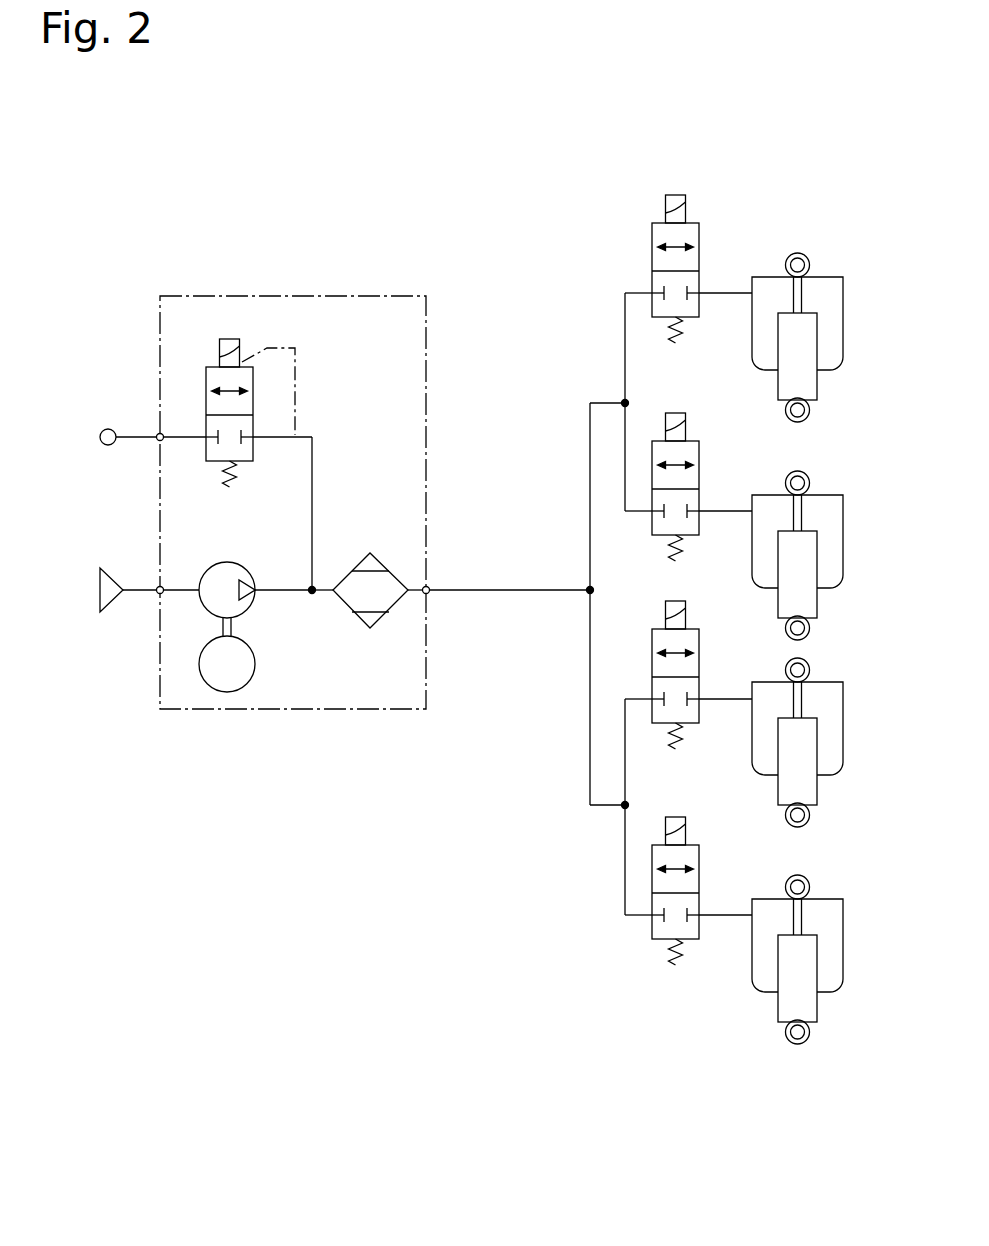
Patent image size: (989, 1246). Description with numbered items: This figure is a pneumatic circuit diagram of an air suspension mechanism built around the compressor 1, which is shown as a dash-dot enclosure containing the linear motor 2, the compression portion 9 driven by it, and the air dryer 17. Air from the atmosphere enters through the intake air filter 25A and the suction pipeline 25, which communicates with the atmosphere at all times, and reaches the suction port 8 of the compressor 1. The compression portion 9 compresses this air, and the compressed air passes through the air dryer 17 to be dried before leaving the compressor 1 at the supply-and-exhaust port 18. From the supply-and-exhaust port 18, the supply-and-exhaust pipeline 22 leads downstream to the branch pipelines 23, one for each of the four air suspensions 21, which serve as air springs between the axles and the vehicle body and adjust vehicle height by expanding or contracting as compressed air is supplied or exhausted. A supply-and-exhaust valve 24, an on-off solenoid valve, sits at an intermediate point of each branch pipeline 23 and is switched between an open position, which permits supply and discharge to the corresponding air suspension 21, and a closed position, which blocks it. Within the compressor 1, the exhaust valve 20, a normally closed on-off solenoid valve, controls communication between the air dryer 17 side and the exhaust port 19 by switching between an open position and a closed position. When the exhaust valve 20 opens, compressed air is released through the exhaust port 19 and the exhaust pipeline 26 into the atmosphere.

The compressor 1 is at (268, 295).
The linear motor 2 is at (257, 665).
The suction port 8 is at (157, 588).
The compression portion 9 is at (213, 562).
The air dryer 17 is at (388, 570).
The supply-and-exhaust port 18 is at (428, 593).
The exhaust port 19 is at (157, 442).
The exhaust valve 20 is at (215, 364).
The air suspension 21 is at (822, 277).
The supply-and-exhaust pipeline 22 is at (500, 588).
The branch pipeline 23 is at (623, 328).
The supply-and-exhaust valve 24 is at (692, 222).
The suction pipeline 25 is at (140, 595).
The intake air filter 25A is at (103, 617).
The exhaust pipeline 26 is at (140, 433).